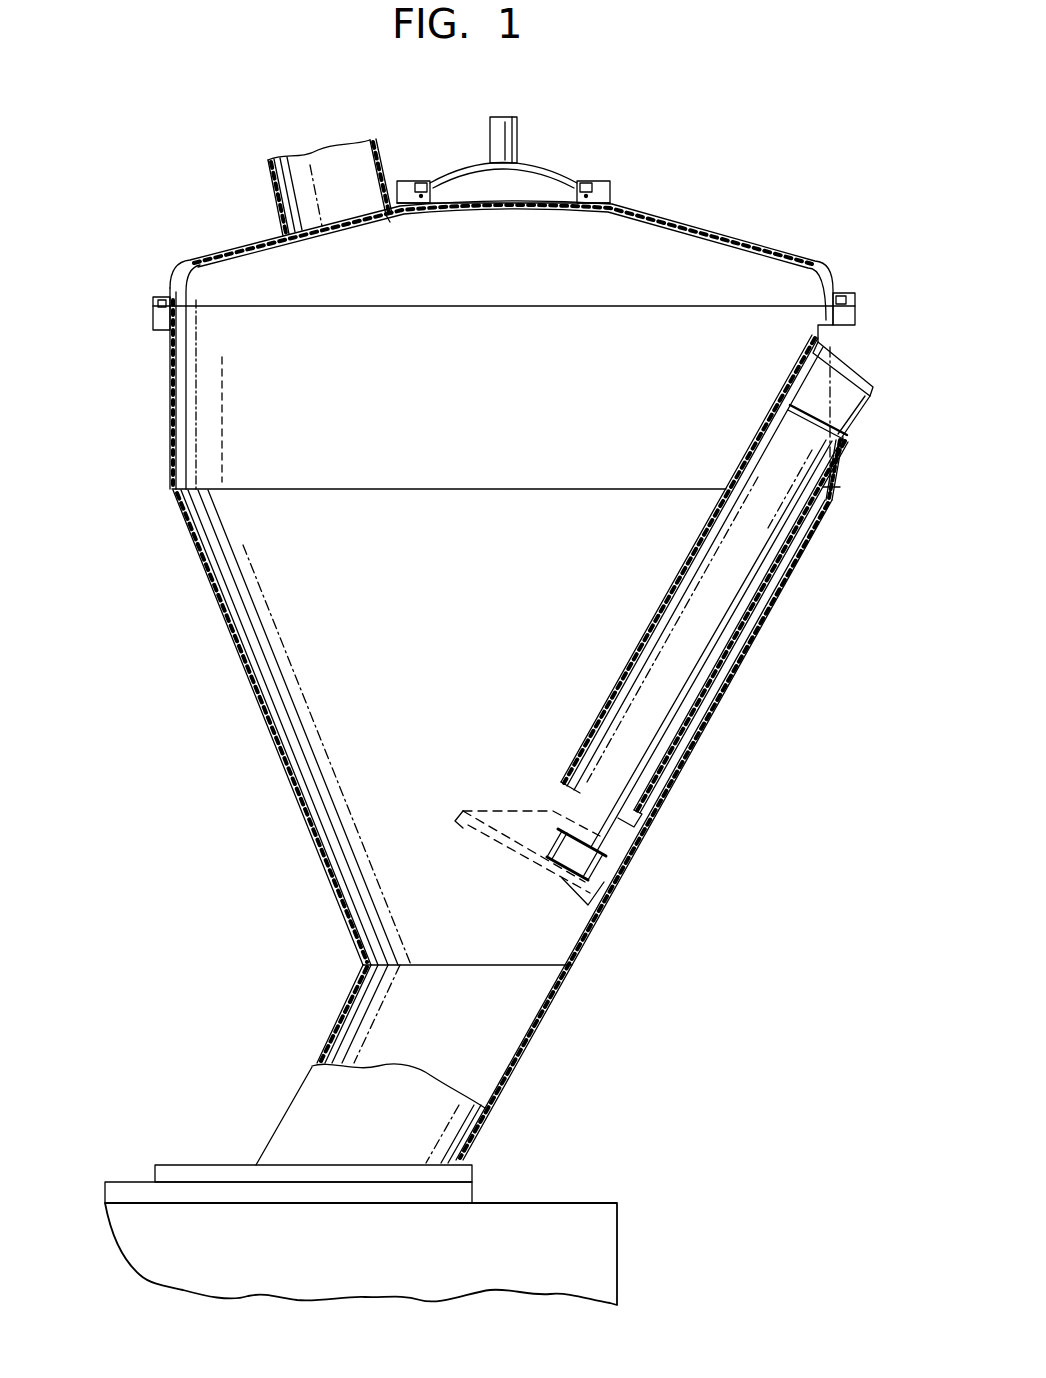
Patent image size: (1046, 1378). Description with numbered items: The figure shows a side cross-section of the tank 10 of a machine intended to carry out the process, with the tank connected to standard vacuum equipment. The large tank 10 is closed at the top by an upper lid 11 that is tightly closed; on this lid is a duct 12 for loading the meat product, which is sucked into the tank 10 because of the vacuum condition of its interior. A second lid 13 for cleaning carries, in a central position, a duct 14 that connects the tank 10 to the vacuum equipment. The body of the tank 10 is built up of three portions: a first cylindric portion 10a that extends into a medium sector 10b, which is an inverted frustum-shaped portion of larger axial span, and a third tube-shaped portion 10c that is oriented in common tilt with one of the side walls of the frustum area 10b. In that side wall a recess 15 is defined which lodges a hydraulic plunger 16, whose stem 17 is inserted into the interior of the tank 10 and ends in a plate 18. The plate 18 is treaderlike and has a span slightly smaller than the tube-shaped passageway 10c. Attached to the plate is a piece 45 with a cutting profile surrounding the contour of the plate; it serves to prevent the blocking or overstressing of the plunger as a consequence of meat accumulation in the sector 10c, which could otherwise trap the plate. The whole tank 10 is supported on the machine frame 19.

The tank 10 is at (274, 808).
The first cylindric portion 10a is at (170, 381).
The medium sector 10b is at (220, 603).
The third tube-shaped portion 10c is at (339, 1016).
The upper lid 11 is at (715, 223).
The duct 12 is at (377, 160).
The manhole cover 13 is at (556, 170).
The duct 14 is at (512, 132).
The recess 15 is at (848, 345).
The hydraulic plunger 16 is at (727, 611).
The stem 17 is at (596, 866).
The plate 18 is at (572, 887).
The machine frame 19 is at (597, 1251).
The piece with a cutting profile 45 is at (455, 824).